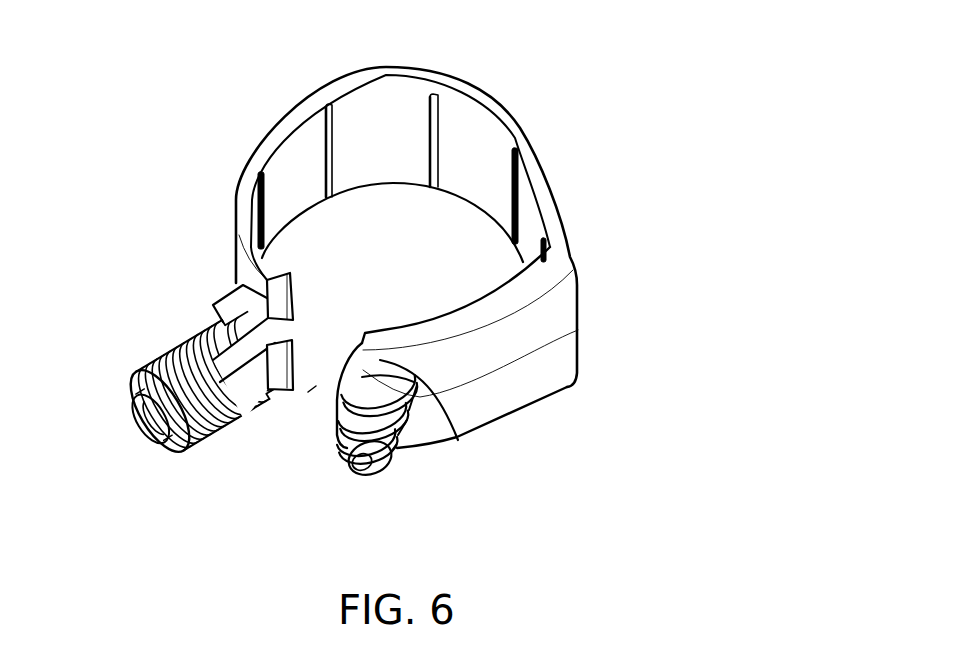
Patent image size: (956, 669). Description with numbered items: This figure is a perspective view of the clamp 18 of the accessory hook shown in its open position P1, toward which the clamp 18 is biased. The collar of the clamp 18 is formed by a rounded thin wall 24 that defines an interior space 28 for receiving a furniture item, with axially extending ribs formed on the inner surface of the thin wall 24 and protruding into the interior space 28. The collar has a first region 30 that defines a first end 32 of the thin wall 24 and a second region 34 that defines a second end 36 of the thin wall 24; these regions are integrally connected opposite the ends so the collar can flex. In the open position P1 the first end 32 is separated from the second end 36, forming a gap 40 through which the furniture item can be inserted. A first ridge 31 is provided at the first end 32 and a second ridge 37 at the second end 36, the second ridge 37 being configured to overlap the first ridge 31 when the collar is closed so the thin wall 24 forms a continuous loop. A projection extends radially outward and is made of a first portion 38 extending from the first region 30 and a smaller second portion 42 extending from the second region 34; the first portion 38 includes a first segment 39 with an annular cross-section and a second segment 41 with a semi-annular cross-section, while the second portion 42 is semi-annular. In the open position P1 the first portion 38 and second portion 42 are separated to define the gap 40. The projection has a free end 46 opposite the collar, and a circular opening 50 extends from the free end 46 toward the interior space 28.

The clamp 18 is at (365, 278).
The thin wall 24 is at (522, 398).
The interior space 28 is at (437, 213).
The first region 30 is at (297, 100).
The first ridge 31 is at (211, 359).
The first end 32 is at (260, 257).
The second region 34 is at (560, 310).
The second end 36 is at (458, 440).
The second ridge 37 is at (339, 444).
The first portion 38 is at (172, 411).
The first segment 39 is at (135, 380).
The gap 40 is at (318, 383).
The second segment 41 is at (218, 312).
The second portion 42 is at (393, 452).
The free end 46 is at (165, 452).
The opening 50 is at (143, 427).
The open position P1 is at (531, 65).